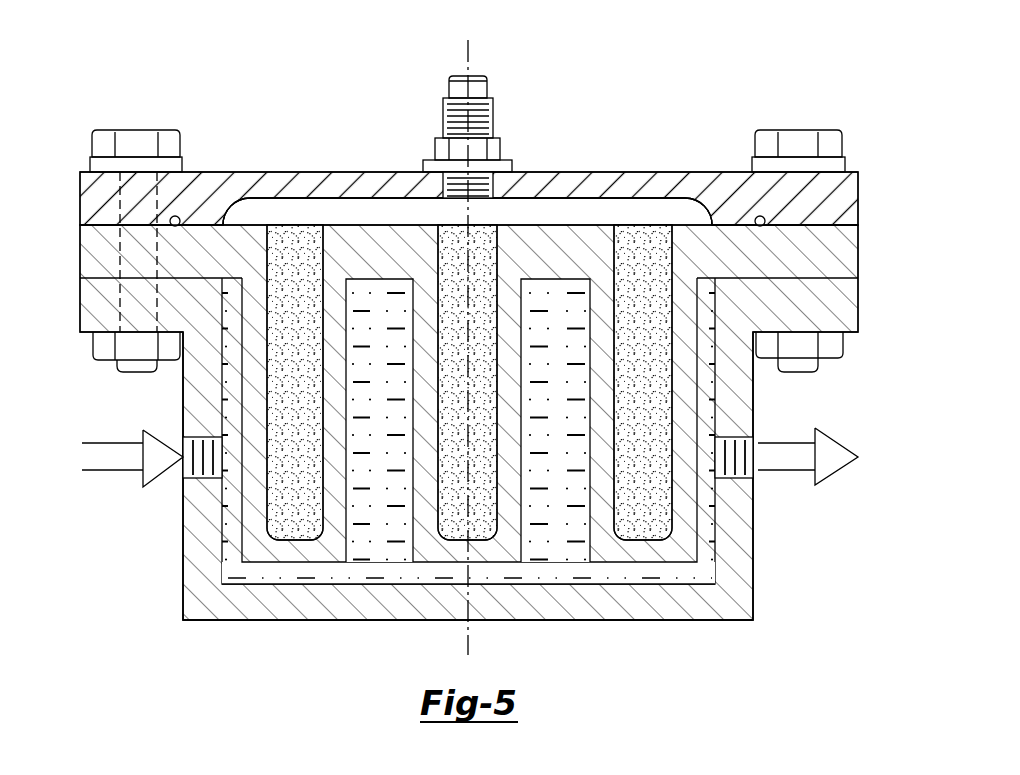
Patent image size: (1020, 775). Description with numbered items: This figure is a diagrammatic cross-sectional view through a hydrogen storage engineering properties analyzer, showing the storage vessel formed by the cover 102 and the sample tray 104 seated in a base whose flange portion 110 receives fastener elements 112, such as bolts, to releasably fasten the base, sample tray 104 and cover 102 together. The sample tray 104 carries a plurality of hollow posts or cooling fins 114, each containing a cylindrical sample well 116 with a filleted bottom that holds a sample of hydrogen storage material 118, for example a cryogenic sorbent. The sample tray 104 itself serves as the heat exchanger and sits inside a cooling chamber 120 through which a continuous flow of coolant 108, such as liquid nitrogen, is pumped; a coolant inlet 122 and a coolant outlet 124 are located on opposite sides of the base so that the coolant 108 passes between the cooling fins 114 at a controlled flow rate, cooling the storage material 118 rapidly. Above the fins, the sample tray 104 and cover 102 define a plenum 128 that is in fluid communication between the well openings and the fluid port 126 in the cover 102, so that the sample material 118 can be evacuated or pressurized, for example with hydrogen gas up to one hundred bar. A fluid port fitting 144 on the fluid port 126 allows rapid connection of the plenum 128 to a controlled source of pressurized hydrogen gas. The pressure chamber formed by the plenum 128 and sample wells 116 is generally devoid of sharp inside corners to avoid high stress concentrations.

The cover 102 is at (547, 178).
The sample tray 104 is at (80, 245).
The coolant 108 is at (404, 480).
The flange portion 110 is at (855, 298).
The fastener elements 112 is at (135, 128).
The cooling fins 114 is at (240, 507).
The sample well 116 is at (280, 510).
The hydrogen storage material 118 is at (305, 401).
The cooling chamber 120 is at (370, 548).
The coolant inlet 122 is at (193, 458).
The coolant outlet 124 is at (743, 453).
The fluid port 126 is at (468, 72).
The plenum 128 is at (355, 213).
The fluid port fitting 144 is at (442, 118).